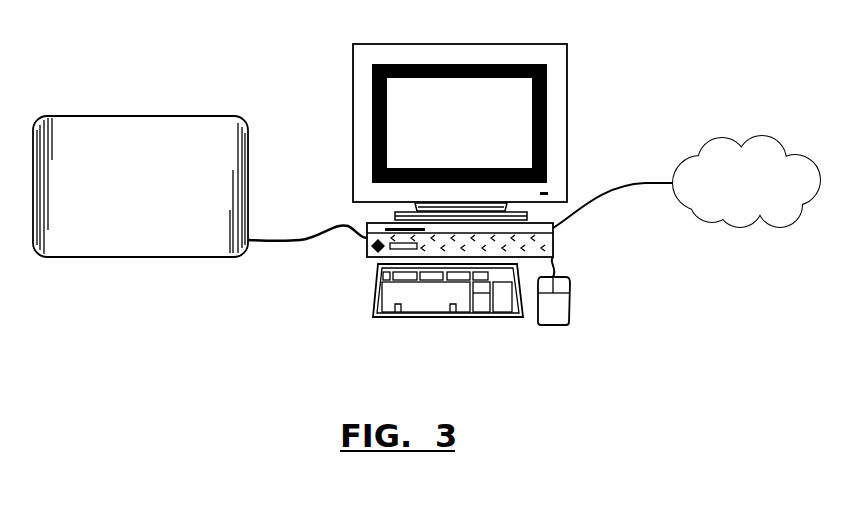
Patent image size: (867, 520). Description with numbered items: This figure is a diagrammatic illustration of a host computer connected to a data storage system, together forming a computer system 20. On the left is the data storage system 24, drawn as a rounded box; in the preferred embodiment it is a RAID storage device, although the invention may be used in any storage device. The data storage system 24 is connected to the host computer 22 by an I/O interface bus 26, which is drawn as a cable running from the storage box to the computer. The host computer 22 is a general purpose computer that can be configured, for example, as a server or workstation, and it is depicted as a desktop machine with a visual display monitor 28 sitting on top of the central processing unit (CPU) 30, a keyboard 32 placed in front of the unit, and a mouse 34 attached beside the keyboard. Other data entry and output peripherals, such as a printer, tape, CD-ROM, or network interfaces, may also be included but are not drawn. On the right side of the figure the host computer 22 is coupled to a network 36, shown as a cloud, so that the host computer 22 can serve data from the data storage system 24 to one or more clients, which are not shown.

The computer system 20 is at (189, 42).
The host computer 22 is at (455, 40).
The data storage system 24 is at (137, 114).
The I/O interface bus 26 is at (340, 224).
The visual display monitor 28 is at (568, 113).
The central processing unit (CPU) 30 is at (556, 238).
The keyboard 32 is at (375, 292).
The mouse 34 is at (570, 290).
The network 36 is at (726, 140).